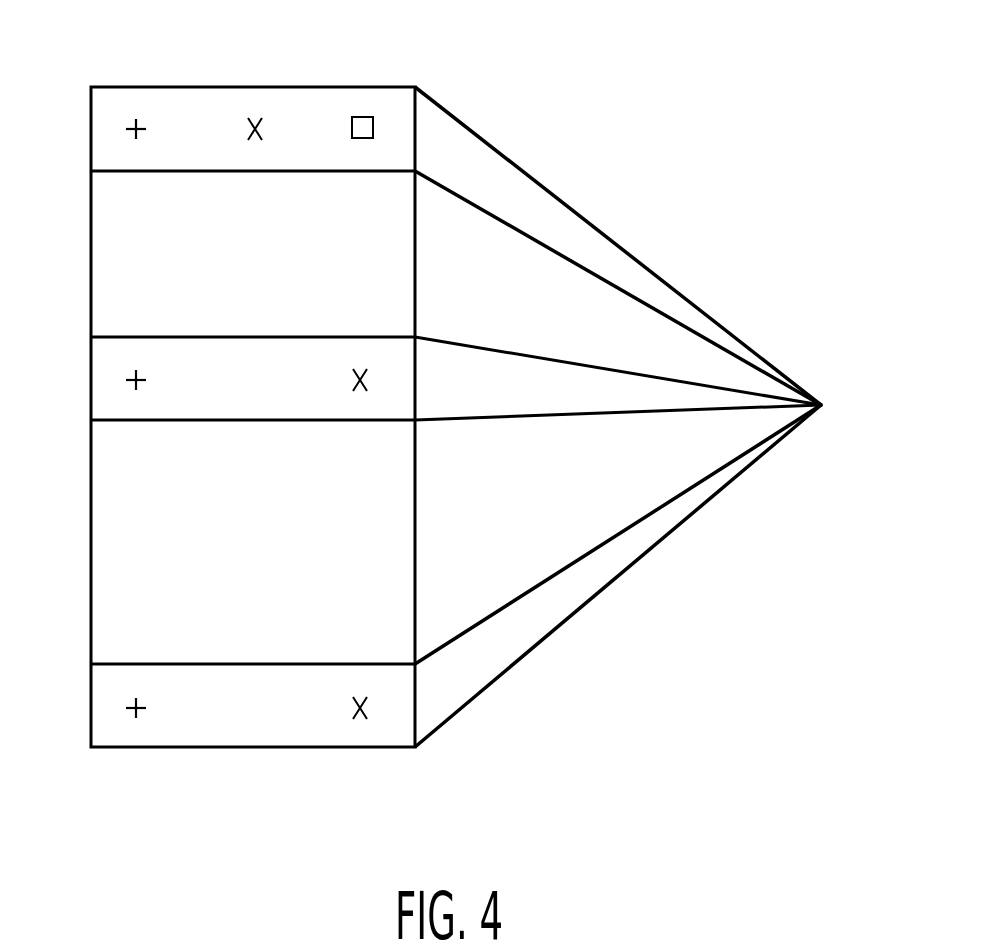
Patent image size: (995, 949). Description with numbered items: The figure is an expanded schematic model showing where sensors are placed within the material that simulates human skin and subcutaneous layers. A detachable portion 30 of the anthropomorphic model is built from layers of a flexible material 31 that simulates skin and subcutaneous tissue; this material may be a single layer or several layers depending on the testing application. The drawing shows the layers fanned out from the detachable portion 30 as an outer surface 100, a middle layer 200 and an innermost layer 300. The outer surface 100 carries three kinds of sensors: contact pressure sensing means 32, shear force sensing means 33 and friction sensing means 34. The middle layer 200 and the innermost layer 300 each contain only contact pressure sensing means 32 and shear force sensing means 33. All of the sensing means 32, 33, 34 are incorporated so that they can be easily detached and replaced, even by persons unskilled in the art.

The detachable portion 30 is at (822, 410).
The flexible material simulating human skin and subcutaneous tissue 31 is at (91, 129).
The contact pressure sensing means 32 is at (142, 125).
The shear force sensing means 33 is at (262, 122).
The friction sensing means 34 is at (371, 121).
The outer surface 100 is at (517, 191).
The middle layer 200 is at (613, 388).
The innermost layer 300 is at (253, 728).